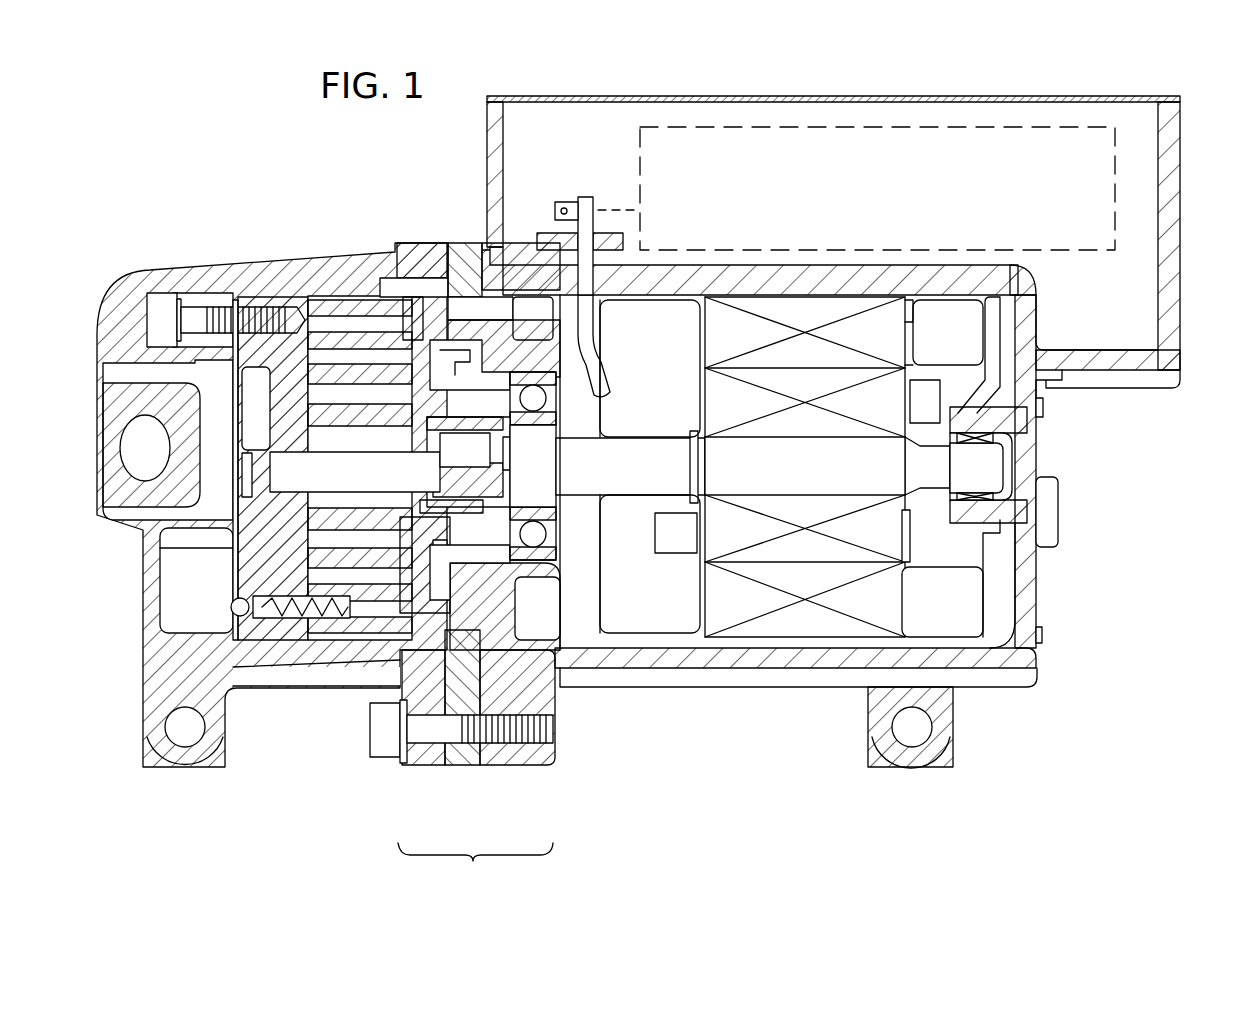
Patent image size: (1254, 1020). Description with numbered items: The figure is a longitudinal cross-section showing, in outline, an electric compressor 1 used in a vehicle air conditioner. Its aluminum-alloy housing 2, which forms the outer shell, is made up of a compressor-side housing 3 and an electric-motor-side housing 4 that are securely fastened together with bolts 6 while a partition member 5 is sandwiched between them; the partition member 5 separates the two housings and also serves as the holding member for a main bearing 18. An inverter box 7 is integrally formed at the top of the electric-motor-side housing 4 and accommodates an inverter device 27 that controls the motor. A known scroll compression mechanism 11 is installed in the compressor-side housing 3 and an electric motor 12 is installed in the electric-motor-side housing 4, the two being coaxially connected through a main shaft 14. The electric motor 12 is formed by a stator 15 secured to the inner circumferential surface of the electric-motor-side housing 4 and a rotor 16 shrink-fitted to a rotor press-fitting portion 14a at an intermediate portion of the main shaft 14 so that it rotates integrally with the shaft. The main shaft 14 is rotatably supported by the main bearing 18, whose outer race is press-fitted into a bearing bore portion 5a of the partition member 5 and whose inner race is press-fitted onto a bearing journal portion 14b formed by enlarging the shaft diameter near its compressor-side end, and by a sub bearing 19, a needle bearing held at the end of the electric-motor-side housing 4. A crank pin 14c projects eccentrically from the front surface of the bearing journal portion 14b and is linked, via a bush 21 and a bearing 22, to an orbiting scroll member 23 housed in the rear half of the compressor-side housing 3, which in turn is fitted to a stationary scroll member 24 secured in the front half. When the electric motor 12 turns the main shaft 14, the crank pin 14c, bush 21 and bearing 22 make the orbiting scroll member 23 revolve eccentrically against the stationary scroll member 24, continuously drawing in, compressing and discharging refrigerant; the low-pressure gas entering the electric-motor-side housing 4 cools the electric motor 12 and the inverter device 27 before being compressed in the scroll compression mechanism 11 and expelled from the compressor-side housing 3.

The electric compressor 1 is at (290, 152).
The housing 2 is at (475, 868).
The compressor-side housing 3 is at (420, 767).
The electric-motor-side housing 4 is at (525, 767).
The partition member 5 is at (463, 767).
The bearing bore portion 5a is at (548, 538).
The bolts 6 is at (370, 732).
The inverter box 7 is at (866, 247).
The scroll compression mechanism 11 is at (345, 298).
The electric motor 12 is at (766, 636).
The main shaft 14 is at (662, 437).
The rotor press-fitting portion 14a is at (735, 465).
The bearing journal portion 14b is at (546, 452).
The crank pin 14c is at (453, 448).
The stator 15 is at (885, 336).
The rotor 16 is at (885, 537).
The main bearing 18 is at (546, 402).
The sub bearing 19 is at (972, 438).
The bush 21 is at (502, 480).
The bearing 22 is at (463, 403).
The orbiting scroll member 23 is at (356, 567).
The stationary scroll member 24 is at (282, 563).
The inverter device 27 is at (640, 153).